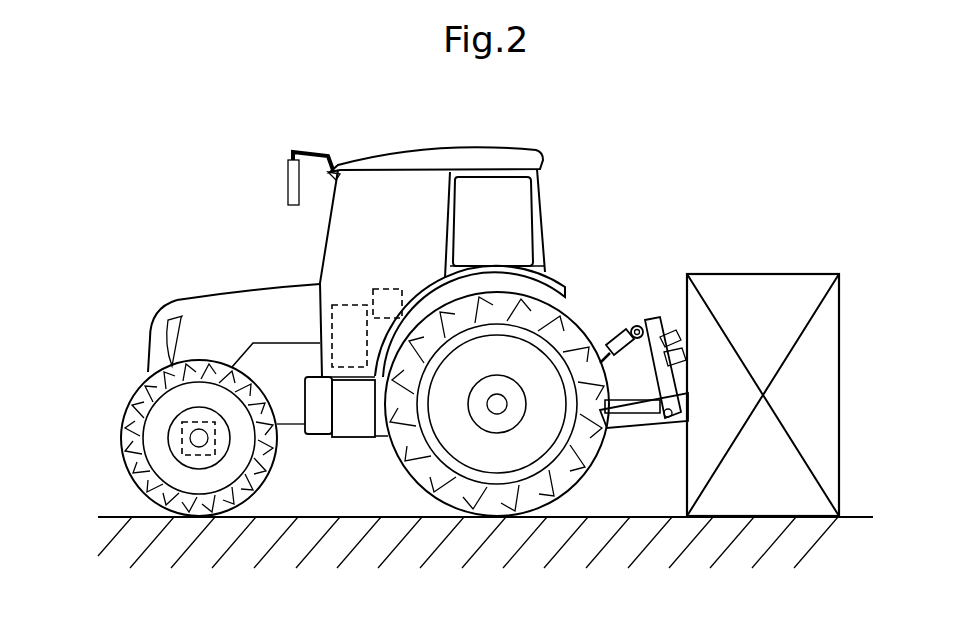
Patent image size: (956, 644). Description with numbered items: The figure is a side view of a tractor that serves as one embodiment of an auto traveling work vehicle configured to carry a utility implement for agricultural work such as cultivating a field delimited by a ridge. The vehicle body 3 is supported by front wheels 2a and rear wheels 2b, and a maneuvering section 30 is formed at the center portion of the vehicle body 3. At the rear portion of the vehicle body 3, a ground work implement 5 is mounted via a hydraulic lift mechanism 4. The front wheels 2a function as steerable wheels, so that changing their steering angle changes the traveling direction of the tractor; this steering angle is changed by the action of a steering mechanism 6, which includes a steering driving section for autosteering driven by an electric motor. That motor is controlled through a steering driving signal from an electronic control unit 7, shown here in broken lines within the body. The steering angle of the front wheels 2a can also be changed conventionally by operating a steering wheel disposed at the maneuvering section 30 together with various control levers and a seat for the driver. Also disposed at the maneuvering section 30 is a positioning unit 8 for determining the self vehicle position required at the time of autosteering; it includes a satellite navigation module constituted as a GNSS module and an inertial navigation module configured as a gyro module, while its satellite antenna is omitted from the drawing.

The vehicle body 3 is at (213, 281).
The maneuvering section 30 is at (370, 193).
The front wheels 2a is at (125, 465).
The rear wheels 2b is at (585, 460).
The hydraulic lift mechanism 4 is at (612, 318).
The ground work implement 5 is at (805, 282).
The steering mechanism 6 is at (228, 450).
The electronic control unit 7 is at (352, 380).
The positioning unit 8 is at (387, 289).